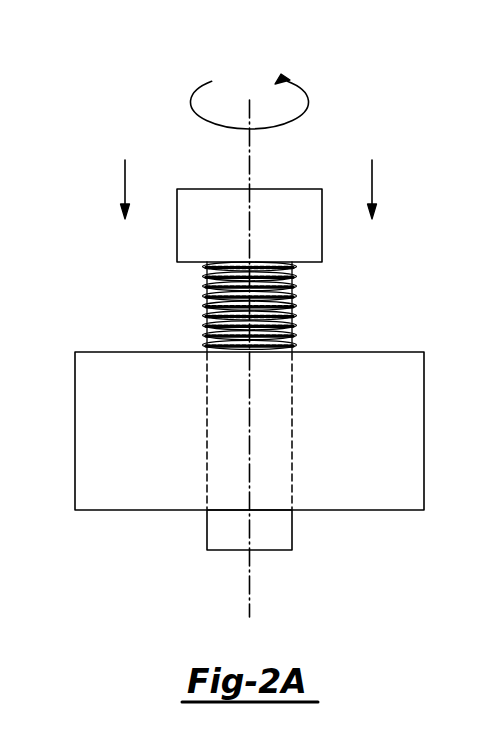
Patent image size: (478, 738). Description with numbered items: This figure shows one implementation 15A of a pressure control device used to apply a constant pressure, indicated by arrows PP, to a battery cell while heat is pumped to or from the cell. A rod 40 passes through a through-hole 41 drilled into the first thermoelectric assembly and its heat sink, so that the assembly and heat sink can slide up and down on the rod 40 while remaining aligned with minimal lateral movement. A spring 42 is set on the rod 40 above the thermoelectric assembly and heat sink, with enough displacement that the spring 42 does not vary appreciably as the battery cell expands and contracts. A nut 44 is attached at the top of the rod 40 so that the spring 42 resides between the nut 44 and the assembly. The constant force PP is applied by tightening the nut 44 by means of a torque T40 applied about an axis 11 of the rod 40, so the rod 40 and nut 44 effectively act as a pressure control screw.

The pressure control device implementation 15A is at (396, 64).
The axis 11 is at (251, 153).
The rod 40 is at (240, 369).
The nut 44 is at (311, 245).
The spring 42 is at (299, 306).
The through-hole 41 is at (207, 461).
The torque T40 is at (250, 94).
The constant pressure PP is at (248, 179).